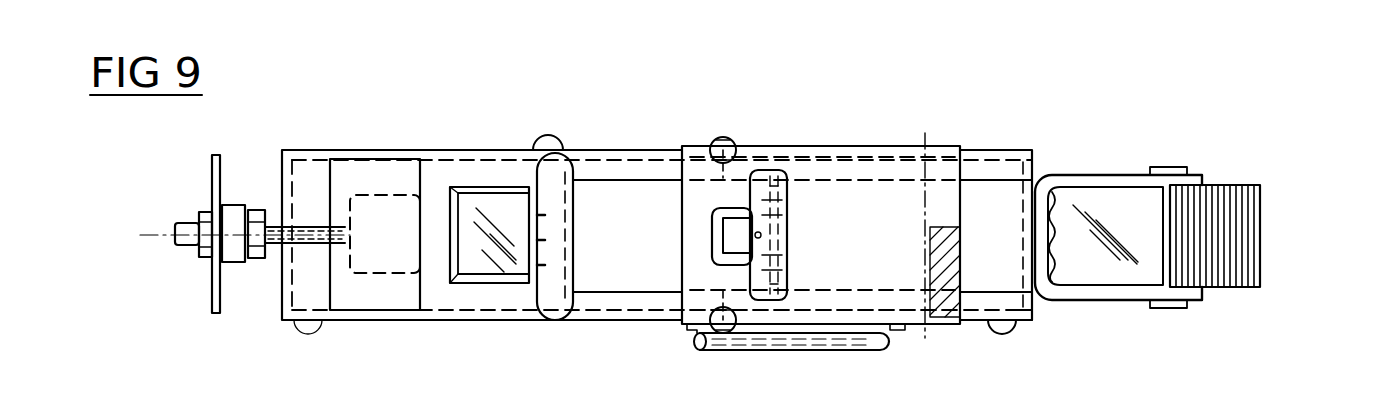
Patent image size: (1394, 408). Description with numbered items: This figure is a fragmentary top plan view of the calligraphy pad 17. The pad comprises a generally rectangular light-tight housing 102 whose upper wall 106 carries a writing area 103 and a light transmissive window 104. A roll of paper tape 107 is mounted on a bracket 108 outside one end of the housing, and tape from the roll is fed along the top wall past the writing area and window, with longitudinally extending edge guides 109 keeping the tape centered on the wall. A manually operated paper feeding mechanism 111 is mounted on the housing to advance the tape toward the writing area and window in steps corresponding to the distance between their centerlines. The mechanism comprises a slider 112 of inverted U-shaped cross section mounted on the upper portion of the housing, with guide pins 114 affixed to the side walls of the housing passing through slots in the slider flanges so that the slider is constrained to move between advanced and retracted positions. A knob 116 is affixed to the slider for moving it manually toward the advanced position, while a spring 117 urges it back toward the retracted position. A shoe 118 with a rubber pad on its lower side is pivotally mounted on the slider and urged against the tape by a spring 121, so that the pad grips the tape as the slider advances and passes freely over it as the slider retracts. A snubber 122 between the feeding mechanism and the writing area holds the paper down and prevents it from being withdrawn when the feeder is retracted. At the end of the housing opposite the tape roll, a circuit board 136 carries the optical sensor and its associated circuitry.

The calligraphy pad 17 is at (604, 134).
The light-tight housing 102 is at (615, 320).
The writing area 103 is at (491, 205).
The light transmissive window 104 is at (385, 274).
The upper wall 106 is at (302, 298).
The roll of paper tape 107 is at (1260, 248).
The bracket 108 is at (1108, 175).
The edge guides 109 is at (987, 155).
The paper feeding mechanism 111 is at (849, 162).
The slider 112 is at (905, 312).
The guide pins 114 is at (721, 138).
The knob 116 is at (775, 283).
The spring 117 is at (805, 350).
The shoe 118 is at (713, 213).
The spring 121 is at (729, 245).
The snubber 122 is at (557, 316).
The circuit board 136 is at (211, 274).